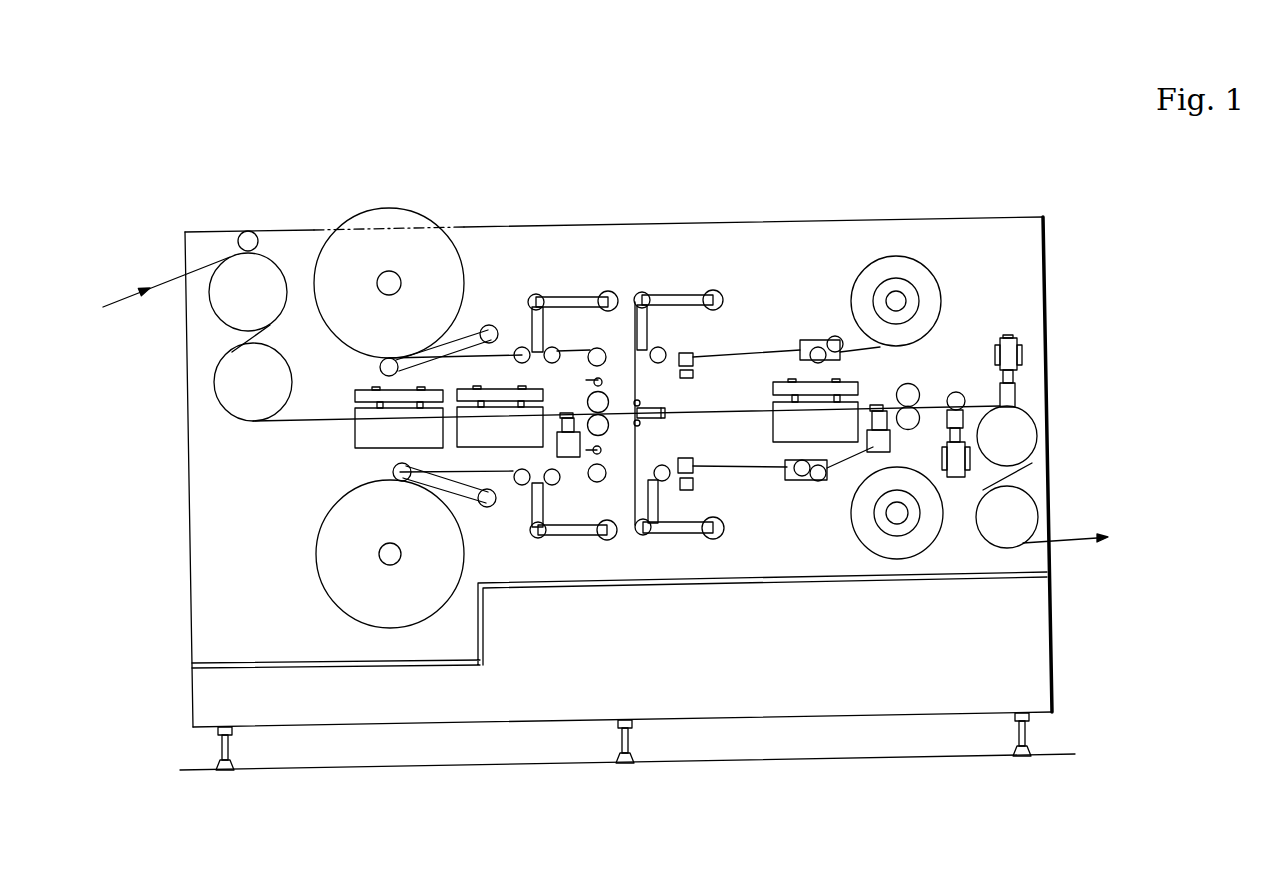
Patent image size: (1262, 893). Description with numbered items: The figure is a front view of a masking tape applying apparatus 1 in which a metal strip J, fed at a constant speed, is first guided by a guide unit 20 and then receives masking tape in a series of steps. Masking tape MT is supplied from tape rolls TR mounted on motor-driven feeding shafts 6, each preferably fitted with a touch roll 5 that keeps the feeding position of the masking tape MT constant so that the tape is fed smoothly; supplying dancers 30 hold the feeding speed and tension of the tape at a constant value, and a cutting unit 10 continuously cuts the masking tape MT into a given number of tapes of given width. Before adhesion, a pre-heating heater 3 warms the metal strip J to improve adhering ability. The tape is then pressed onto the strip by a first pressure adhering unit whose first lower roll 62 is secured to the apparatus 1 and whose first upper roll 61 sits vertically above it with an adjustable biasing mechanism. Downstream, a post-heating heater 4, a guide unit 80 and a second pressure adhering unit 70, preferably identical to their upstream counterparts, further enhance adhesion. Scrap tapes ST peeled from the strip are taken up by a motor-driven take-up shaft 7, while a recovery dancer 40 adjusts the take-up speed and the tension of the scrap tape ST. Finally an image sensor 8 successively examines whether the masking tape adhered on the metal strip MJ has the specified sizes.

The masking tape applying apparatus 1 is at (1048, 203).
The pre-heating heater 3 is at (470, 442).
The post-heating heater 4 is at (780, 442).
The touch roll 5 is at (466, 340).
The feeding shaft 6 is at (389, 283).
The take-up shaft 7 is at (890, 293).
The image sensor 8 is at (1010, 340).
The cutting unit 10 is at (607, 393).
The guide unit 20 is at (572, 456).
The supplying dancer 30 is at (570, 297).
The recovery dancer 40 is at (685, 295).
The first upper roll 61 is at (601, 378).
The first lower roll 62 is at (602, 458).
The second pressure adhering unit 70 is at (920, 383).
The guide unit 80 is at (873, 452).
The metal strip J is at (307, 420).
The masking tape MT is at (502, 360).
The tape roll TR is at (417, 215).
The scrap tape ST is at (902, 262).
The metal strip with adhered masking tape MJ is at (1076, 540).